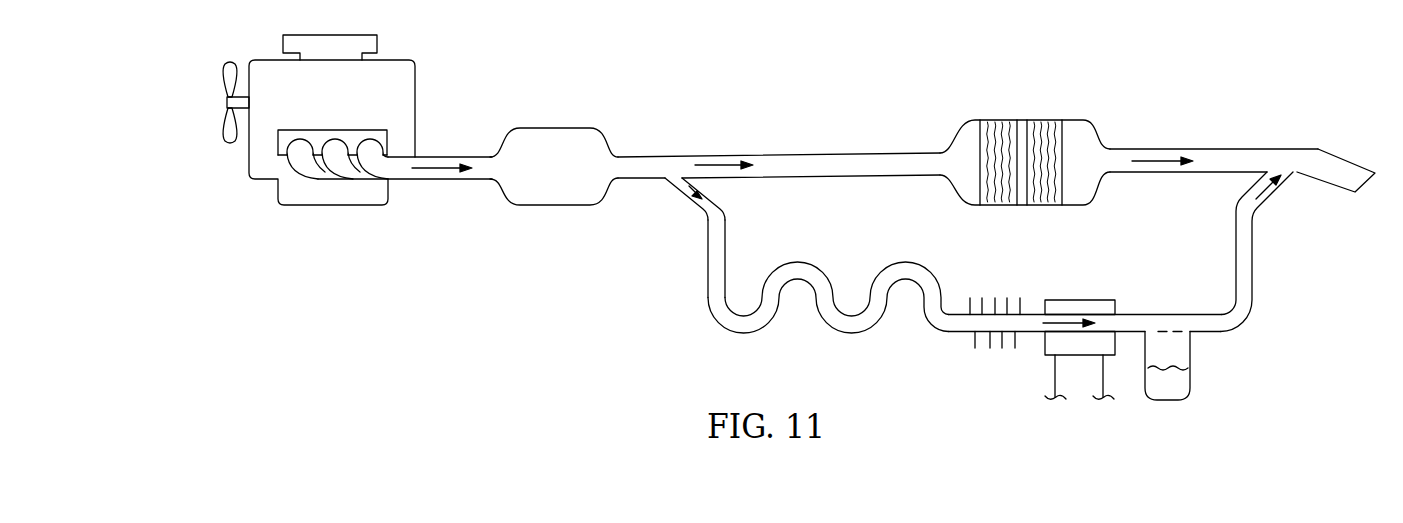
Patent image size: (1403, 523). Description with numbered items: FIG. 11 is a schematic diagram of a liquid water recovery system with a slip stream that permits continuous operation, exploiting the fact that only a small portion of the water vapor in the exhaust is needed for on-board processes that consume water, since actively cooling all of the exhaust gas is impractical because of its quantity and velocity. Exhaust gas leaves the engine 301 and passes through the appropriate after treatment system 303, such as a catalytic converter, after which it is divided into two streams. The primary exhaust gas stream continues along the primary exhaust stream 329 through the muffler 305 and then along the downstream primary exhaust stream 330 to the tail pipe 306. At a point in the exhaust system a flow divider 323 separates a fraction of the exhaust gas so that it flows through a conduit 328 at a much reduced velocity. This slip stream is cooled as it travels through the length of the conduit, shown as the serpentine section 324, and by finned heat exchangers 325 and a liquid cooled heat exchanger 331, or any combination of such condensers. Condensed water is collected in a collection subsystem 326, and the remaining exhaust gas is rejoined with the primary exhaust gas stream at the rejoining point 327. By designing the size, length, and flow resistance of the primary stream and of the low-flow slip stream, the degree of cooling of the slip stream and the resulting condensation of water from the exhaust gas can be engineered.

The engine 301 is at (403, 58).
The after treatment system 303 is at (553, 128).
The muffler 305 is at (1023, 118).
The tail pipe 306 is at (1350, 162).
The flow divider 323 is at (672, 188).
The length of the conduit 324 is at (855, 333).
The finned heat exchangers 325 is at (1007, 298).
The collection subsystem 326 is at (1192, 387).
The rejoining point 327 is at (1267, 197).
The conduit 328 is at (707, 268).
The primary exhaust stream 329 is at (790, 152).
The primary exhaust stream 330 is at (1223, 148).
The liquid cooled heat exchanger 331 is at (1075, 300).